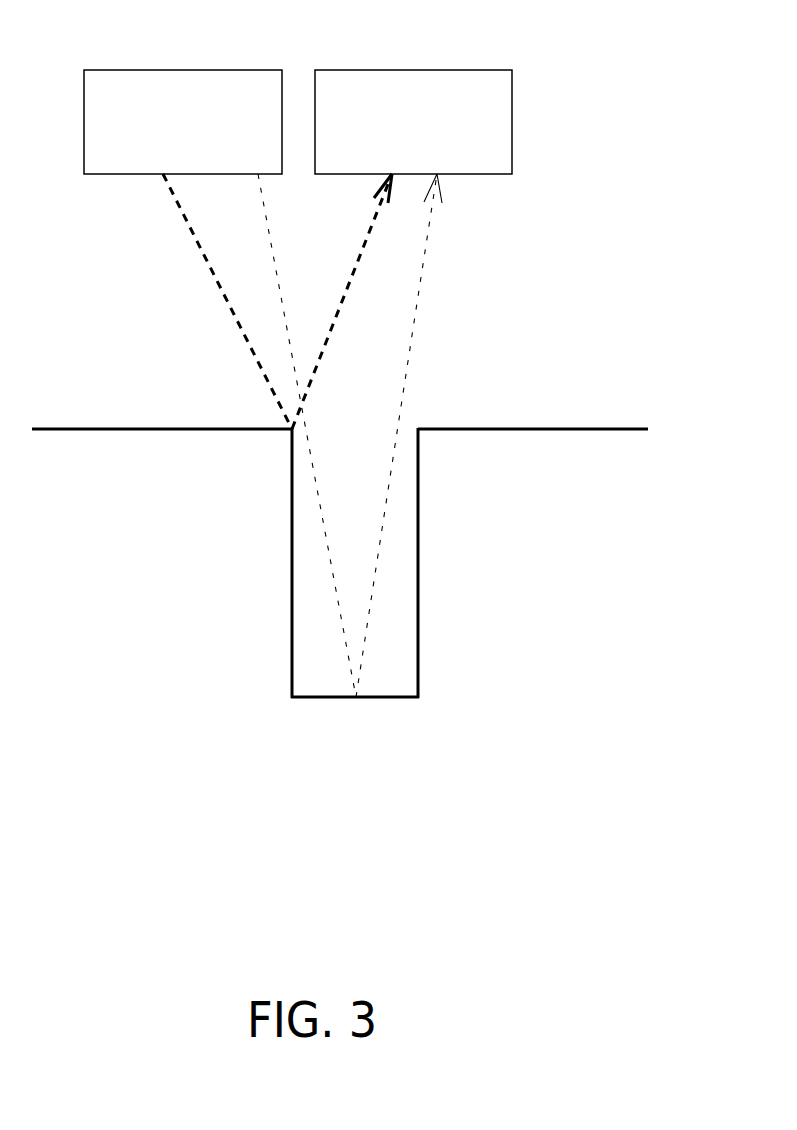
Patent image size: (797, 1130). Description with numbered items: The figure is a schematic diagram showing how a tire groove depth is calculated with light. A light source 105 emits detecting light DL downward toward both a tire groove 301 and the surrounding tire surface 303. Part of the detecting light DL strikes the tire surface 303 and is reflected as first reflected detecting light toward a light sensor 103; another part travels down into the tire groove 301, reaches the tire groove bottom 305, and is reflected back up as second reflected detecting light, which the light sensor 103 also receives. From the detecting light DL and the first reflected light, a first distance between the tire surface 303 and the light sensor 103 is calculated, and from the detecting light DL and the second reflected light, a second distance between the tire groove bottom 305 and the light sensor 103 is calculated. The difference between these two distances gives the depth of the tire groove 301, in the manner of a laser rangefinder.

The light source 105 is at (209, 138).
The light sensor 103 is at (440, 138).
The tire groove 301 is at (292, 565).
The tire surface 303 is at (533, 429).
The tire groove bottom 305 is at (387, 698).
The detecting light DL is at (240, 435).